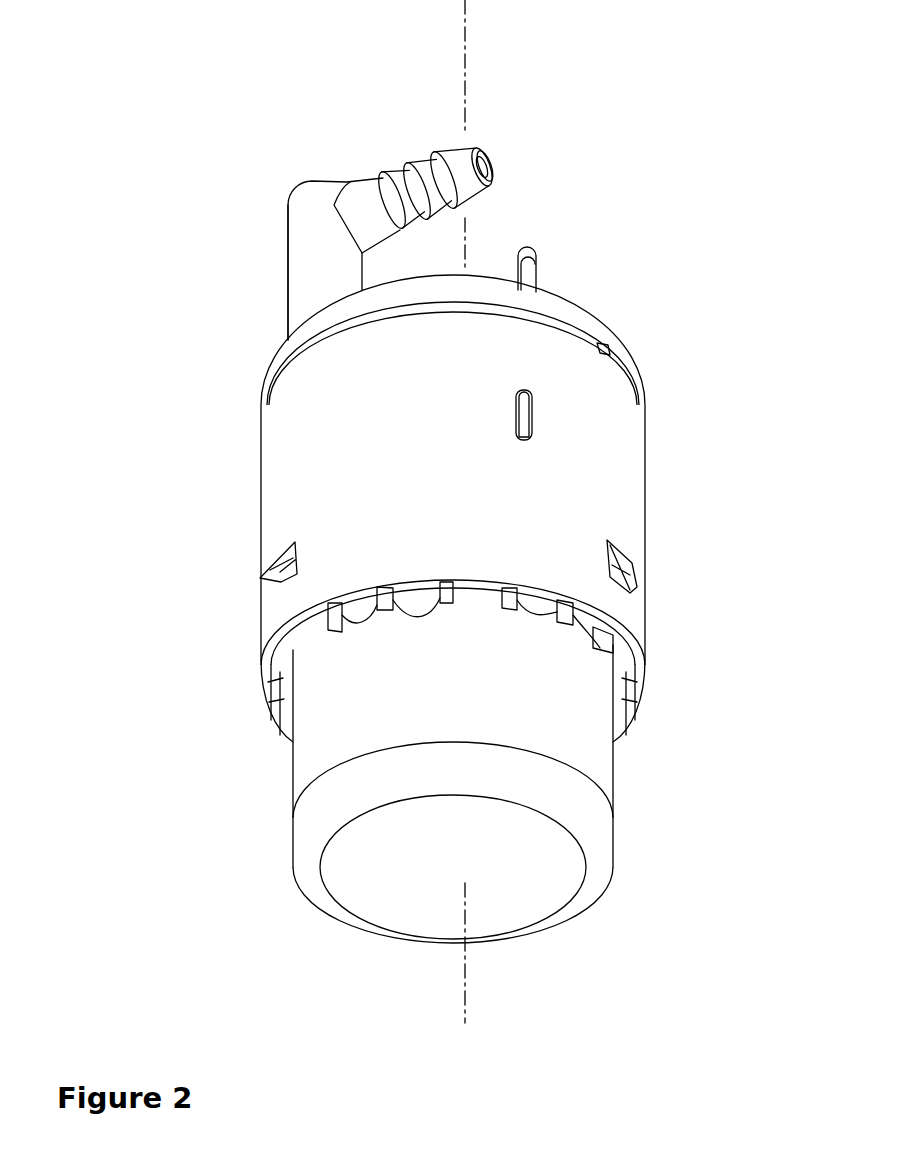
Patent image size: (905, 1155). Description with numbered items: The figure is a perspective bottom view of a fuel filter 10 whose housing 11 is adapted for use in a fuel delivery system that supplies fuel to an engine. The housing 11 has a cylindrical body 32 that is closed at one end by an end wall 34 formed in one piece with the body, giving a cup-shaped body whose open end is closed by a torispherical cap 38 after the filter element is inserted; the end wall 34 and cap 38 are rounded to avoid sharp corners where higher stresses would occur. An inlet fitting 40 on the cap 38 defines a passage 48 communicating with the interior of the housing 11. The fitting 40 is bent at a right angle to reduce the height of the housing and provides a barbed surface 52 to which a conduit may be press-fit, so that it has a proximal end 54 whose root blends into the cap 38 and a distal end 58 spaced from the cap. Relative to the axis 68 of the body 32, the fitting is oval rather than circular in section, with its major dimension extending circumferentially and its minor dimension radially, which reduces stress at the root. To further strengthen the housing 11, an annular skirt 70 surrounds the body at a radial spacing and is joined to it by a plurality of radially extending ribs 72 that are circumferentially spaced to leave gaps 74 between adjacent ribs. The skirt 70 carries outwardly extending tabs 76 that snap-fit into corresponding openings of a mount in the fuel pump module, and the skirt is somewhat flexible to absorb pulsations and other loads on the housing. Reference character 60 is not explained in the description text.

The fuel filter 10 is at (690, 174).
The housing 11 is at (667, 464).
The cylindrical body 32 is at (597, 746).
The end wall 34 is at (540, 900).
The cap 38 is at (533, 307).
The inlet fitting 40 is at (307, 263).
The passage 48 is at (497, 172).
The barbed surface 52 is at (423, 155).
The proximal end 54 is at (268, 346).
The distal end 58 is at (480, 143).
The fitting shoulder 60 is at (308, 213).
The axis 68 is at (467, 36).
The annular skirt 70 is at (674, 546).
The ribs 72 is at (515, 600).
The gaps 74 is at (410, 620).
The tabs 76 is at (295, 557).